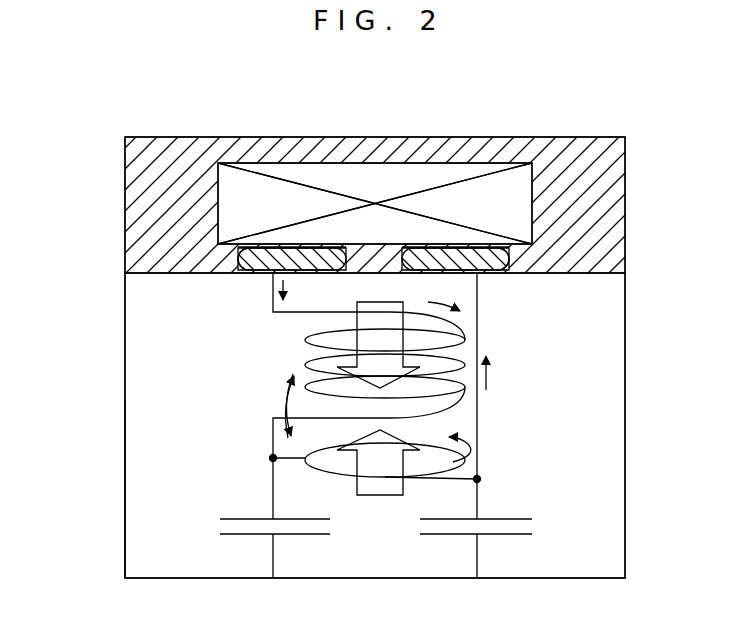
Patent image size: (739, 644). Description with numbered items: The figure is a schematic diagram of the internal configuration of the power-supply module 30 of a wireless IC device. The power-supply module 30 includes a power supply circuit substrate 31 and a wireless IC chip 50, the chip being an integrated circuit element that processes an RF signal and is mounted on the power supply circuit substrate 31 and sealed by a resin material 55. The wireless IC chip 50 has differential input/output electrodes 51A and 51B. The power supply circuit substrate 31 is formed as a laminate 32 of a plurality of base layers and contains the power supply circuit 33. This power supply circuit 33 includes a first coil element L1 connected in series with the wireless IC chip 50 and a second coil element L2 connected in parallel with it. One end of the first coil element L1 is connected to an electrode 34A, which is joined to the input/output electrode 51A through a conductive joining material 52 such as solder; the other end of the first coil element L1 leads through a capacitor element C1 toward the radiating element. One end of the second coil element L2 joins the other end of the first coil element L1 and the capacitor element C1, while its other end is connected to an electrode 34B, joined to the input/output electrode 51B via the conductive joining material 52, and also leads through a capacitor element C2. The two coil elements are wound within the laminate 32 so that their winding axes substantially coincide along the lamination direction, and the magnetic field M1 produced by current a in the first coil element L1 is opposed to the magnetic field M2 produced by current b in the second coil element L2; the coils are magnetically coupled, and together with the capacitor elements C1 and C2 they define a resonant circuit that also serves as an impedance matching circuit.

The power-supply module 30 is at (601, 126).
The power supply circuit substrate 31 is at (125, 395).
The laminate 32 is at (89, 489).
The power supply circuit 33 is at (371, 425).
The electrode 34A is at (248, 272).
The electrode 34B is at (502, 272).
The wireless IC chip 50 is at (375, 187).
The differential input/output electrode 51A is at (291, 243).
The differential input/output electrode 51B is at (454, 243).
The conductive joining material 52 is at (240, 258).
The resin material 55 is at (186, 137).
The first coil element L1 is at (372, 363).
The second coil element L2 is at (375, 474).
The capacitor element C1 is at (258, 528).
The capacitor element C2 is at (492, 528).
The magnetic field M1 is at (378, 334).
The magnetic field M2 is at (378, 476).